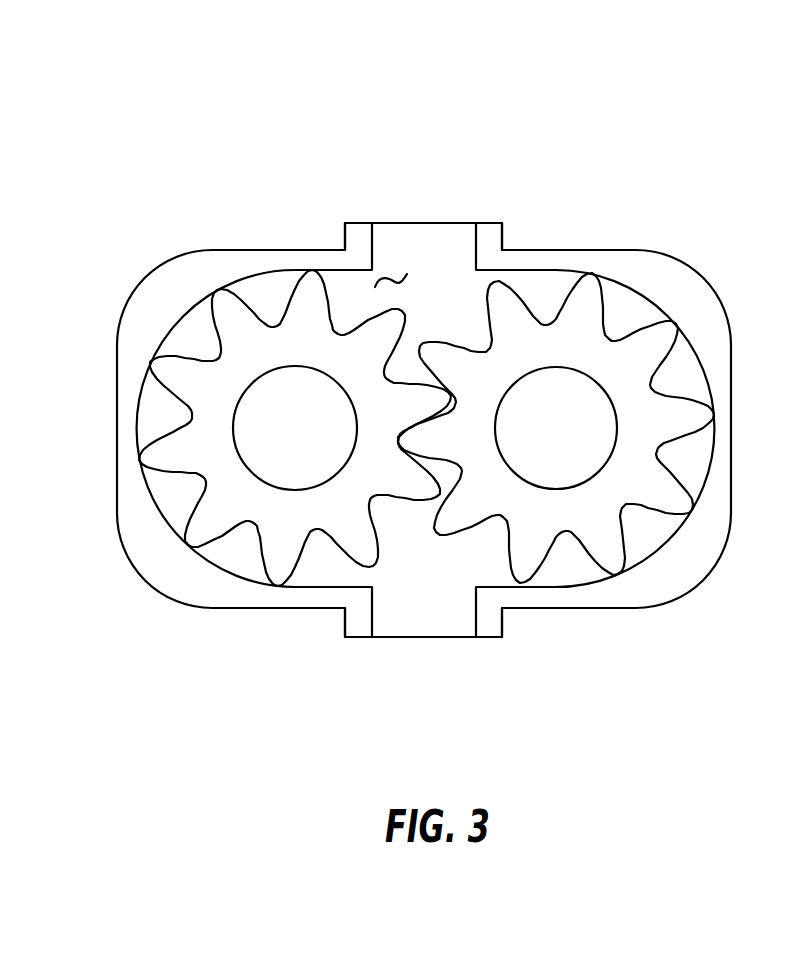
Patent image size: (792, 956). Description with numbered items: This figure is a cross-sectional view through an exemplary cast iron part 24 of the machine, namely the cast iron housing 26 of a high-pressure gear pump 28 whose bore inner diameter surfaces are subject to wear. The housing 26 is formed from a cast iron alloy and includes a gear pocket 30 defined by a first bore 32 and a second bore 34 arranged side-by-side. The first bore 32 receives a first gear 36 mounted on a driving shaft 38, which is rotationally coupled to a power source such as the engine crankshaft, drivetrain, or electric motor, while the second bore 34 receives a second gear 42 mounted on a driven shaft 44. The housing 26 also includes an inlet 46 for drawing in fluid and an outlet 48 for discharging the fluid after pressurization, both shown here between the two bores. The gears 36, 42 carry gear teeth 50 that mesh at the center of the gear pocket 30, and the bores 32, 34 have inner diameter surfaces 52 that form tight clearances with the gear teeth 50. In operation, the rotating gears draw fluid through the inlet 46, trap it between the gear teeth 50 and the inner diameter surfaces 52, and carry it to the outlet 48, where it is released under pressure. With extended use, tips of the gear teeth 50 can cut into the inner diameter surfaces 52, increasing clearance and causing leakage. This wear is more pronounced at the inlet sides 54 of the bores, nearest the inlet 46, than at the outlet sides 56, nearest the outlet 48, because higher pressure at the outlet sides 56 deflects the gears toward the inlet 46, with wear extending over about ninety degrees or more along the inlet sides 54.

The cast iron part 24 is at (650, 275).
The cast iron housing 26 is at (700, 305).
The high-pressure gear pump 28 is at (634, 117).
The gear pocket 30 is at (392, 272).
The first bore 32 is at (708, 470).
The second bore 34 is at (137, 395).
The first gear 36 is at (583, 297).
The driving shaft 38 is at (560, 474).
The second gear 42 is at (235, 315).
The driven shaft 44 is at (263, 463).
The inlet 46 is at (476, 247).
The outlet 48 is at (373, 612).
The gear teeth 50 is at (687, 415).
The inner diameter surfaces 52 is at (137, 444).
The inlet sides 54 is at (213, 117).
The outlet sides 56 is at (174, 705).